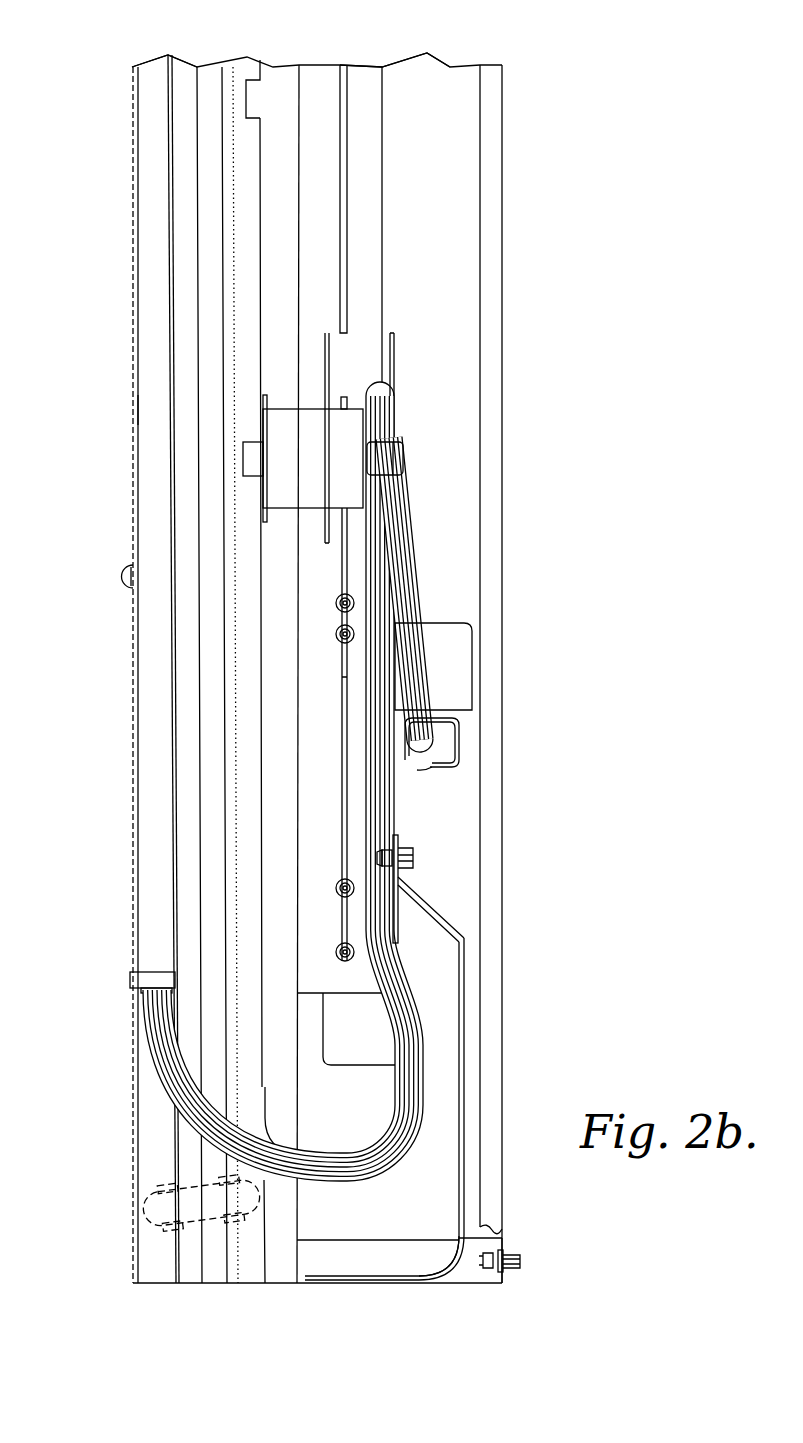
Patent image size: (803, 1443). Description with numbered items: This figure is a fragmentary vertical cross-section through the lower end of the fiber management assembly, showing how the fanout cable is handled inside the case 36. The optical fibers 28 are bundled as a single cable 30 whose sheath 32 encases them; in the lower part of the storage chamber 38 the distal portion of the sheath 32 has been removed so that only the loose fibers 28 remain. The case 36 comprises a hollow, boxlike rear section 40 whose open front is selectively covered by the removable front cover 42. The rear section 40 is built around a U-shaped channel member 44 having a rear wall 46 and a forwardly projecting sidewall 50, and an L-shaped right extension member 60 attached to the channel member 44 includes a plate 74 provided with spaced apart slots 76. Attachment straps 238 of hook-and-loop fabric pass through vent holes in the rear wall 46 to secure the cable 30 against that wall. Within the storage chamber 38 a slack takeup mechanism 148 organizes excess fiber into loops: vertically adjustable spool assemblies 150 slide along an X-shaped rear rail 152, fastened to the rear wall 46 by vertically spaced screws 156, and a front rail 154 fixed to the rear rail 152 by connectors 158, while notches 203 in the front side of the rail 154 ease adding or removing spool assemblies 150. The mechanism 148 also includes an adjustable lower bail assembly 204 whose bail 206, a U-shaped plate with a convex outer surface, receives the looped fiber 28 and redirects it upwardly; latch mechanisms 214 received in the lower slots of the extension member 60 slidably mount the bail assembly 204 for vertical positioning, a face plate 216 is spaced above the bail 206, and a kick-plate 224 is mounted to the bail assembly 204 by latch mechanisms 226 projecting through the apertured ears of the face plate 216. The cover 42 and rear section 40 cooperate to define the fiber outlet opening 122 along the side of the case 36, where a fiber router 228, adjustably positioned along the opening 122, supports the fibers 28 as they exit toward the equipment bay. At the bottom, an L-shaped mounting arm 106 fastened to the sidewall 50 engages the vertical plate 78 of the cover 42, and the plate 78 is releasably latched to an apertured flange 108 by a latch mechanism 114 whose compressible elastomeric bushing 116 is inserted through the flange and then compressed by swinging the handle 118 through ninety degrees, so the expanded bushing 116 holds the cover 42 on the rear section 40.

The optical fibers 28 is at (148, 1027).
The cable 30 is at (160, 748).
The sheath 32 is at (155, 918).
The case 36 is at (132, 67).
The internal storage chamber 38 is at (361, 71).
The rear section 40 is at (133, 1115).
The front cover 42 is at (493, 211).
The channel member 44 is at (132, 117).
The rear wall 46 is at (133, 410).
The sidewall 50 is at (283, 77).
The right extension member 60 is at (372, 164).
The plate 74 is at (375, 112).
The slots 76 is at (345, 244).
The vertical plate 78 is at (503, 117).
The mounting arm 106 is at (445, 1272).
The apertured flange 108 is at (505, 1283).
The latch mechanism 114 is at (520, 1262).
The bushing 116 is at (498, 1272).
The handle 118 is at (510, 1253).
The fiber outlet opening 122 is at (452, 408).
The slack takeup mechanism 148 is at (284, 406).
The spool assembly 150 is at (395, 346).
The rear rail 152 is at (193, 1275).
The front rail 154 is at (243, 1275).
The screws 156 is at (125, 575).
The connectors 158 is at (145, 1210).
The notches 203 is at (246, 88).
The lower bail assembly 204 is at (270, 1120).
The bail 206 is at (360, 1150).
The latch mechanism 214 is at (340, 950).
The face plate 216 is at (398, 930).
The kick-plate 224 is at (465, 1012).
The latch mechanisms 226 is at (405, 852).
The fiber router 228 is at (462, 664).
The attachment strap 238 is at (148, 980).